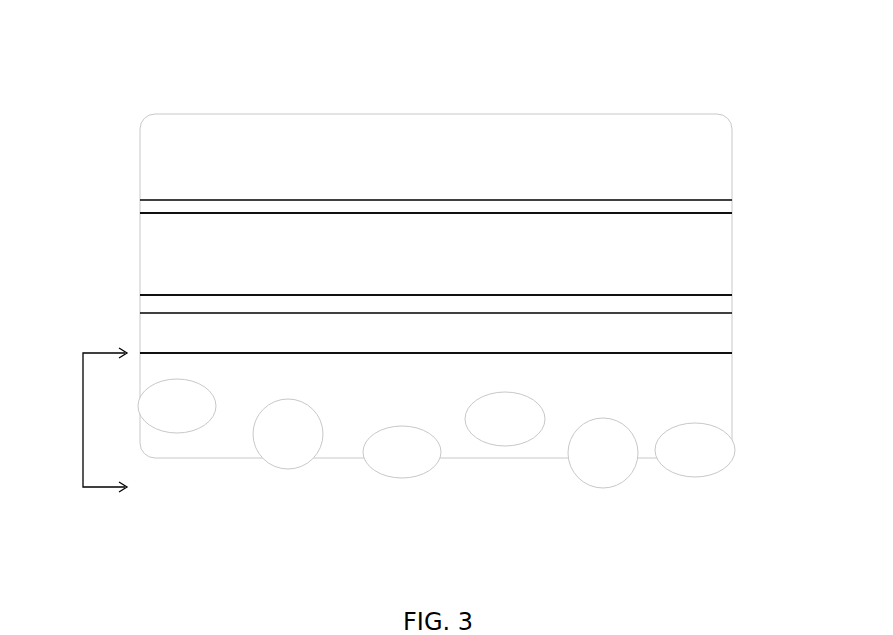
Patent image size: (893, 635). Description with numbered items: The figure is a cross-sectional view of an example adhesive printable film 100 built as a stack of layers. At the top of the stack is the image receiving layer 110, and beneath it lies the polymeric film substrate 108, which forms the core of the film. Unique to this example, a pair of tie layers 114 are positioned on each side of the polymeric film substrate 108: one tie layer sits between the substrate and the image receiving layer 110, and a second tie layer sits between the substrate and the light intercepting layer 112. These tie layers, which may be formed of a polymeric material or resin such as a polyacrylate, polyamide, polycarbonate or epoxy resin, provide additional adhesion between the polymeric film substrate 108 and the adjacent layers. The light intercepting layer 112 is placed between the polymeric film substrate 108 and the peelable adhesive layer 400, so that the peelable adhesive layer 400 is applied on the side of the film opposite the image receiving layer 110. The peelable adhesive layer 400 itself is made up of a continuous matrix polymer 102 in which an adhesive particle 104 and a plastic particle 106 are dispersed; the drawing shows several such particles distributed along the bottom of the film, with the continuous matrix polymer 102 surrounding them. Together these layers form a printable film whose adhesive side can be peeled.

The adhesive printable film 100 is at (176, 96).
The continuous matrix polymer 102 is at (420, 423).
The adhesive particle 104 is at (161, 414).
The plastic particle 106 is at (587, 461).
The polymeric film substrate 108 is at (420, 271).
The image receiving layer 110 is at (420, 176).
The light intercepting layer 112 is at (420, 345).
The tie layers 114 is at (712, 206).
The peelable adhesive layer 400 is at (77, 420).